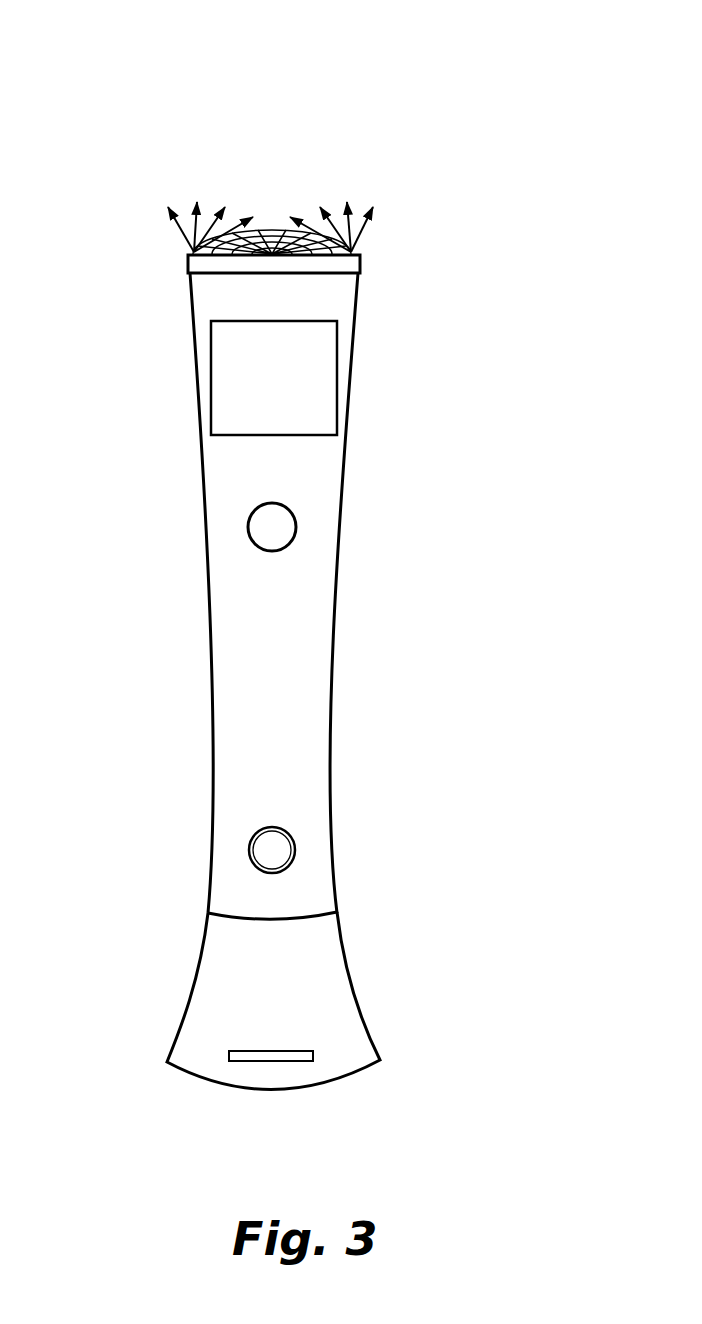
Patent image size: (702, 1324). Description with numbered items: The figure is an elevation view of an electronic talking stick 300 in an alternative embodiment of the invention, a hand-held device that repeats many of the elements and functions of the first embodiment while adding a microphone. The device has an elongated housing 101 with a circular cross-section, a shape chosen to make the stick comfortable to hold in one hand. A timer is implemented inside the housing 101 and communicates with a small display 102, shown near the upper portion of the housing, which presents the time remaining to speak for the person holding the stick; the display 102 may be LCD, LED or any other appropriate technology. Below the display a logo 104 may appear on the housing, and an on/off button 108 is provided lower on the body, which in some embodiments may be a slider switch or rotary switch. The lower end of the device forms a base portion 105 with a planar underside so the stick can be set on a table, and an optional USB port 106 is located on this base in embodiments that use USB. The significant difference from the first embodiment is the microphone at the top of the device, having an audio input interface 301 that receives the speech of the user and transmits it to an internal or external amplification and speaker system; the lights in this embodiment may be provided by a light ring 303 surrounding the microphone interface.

The electronic talking stick 300 is at (312, 172).
The audio input interface 301 is at (273, 232).
The light ring 303 is at (188, 266).
The housing 101 is at (342, 560).
The display 102 is at (342, 373).
The logo 104 is at (253, 666).
The base 105 is at (318, 985).
The USB port 106 is at (270, 1047).
The on/off button 108 is at (300, 845).